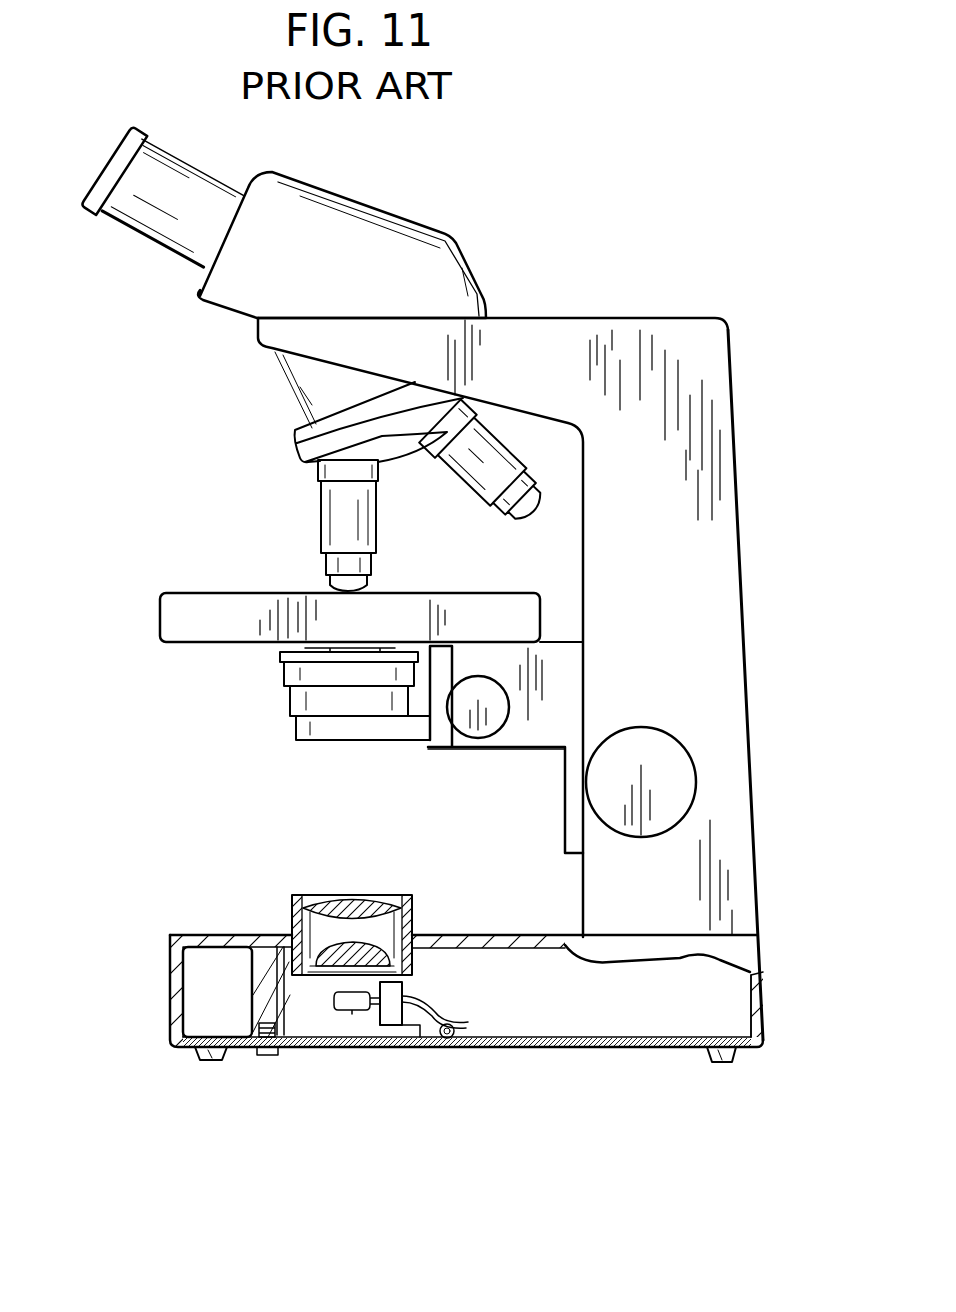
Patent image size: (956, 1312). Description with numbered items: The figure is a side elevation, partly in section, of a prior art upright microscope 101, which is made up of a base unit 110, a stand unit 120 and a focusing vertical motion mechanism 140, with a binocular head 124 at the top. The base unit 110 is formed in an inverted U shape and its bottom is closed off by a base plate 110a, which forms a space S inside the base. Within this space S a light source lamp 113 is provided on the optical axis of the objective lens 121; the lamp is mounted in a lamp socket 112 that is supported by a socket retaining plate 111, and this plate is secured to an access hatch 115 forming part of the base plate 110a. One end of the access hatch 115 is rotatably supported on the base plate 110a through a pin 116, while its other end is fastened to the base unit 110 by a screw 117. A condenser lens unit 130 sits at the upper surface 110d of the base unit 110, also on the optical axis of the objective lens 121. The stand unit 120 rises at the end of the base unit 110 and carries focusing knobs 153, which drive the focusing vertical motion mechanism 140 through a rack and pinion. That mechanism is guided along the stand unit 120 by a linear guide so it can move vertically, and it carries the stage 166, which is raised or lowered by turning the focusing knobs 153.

The upright microscope 101 is at (540, 312).
The stand unit 120 is at (665, 540).
The binocular observation tube 124 is at (400, 238).
The objective lens 121 is at (338, 512).
The stage 166 is at (172, 620).
The focusing vertical motion mechanism 140 is at (567, 723).
The focusing knobs 153 is at (655, 783).
The condenser lens unit 130 is at (290, 885).
The base unit 110 is at (175, 990).
The upper surface of the base unit 110d is at (472, 935).
The base plate 110a is at (680, 1045).
The access hatch 115 is at (305, 1047).
The screw 117 is at (262, 1050).
The light source lamp 113 is at (342, 1050).
The lamp socket 112 is at (390, 1047).
The socket retaining plate 111 is at (415, 1047).
The pin 116 is at (450, 1045).
The space S is at (612, 998).